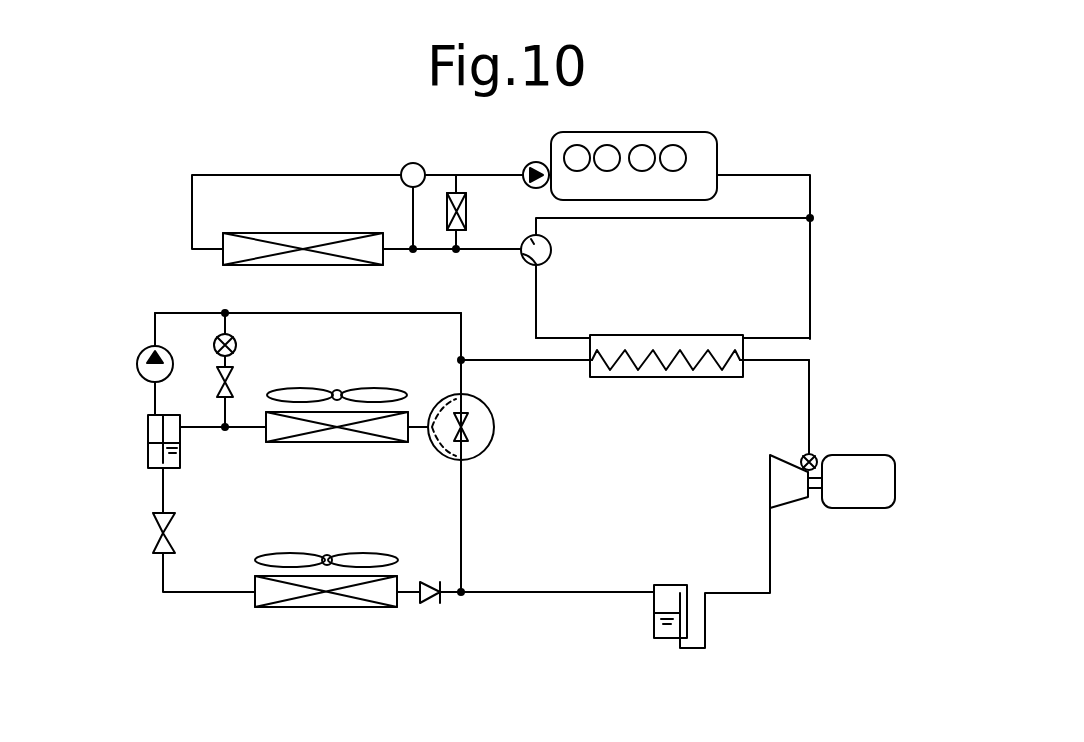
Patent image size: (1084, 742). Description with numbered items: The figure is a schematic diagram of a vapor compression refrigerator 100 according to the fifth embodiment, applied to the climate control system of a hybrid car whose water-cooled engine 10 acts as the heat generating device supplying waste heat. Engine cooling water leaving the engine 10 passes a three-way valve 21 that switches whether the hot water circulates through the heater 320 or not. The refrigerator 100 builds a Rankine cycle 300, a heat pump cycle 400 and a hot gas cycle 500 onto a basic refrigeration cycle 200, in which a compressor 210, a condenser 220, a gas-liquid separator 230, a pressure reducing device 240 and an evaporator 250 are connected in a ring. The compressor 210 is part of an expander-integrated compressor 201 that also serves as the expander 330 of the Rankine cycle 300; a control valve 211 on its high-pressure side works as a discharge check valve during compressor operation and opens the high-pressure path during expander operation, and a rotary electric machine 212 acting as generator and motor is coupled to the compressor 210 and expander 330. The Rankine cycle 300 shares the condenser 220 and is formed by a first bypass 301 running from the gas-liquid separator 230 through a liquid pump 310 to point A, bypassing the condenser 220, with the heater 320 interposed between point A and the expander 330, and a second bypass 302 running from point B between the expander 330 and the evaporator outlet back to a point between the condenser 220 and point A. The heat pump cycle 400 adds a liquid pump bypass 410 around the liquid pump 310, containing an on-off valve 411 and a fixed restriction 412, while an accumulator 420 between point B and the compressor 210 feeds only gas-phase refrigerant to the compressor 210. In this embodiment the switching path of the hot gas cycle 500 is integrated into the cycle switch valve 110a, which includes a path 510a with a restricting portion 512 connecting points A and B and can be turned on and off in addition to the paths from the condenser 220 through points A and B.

The engine 10 is at (717, 142).
The three-way valve 21 is at (552, 250).
The vapor compression refrigerator 100 is at (158, 302).
The cycle switch valve 110a is at (487, 401).
The refrigeration cycle 200 is at (880, 342).
The expander-integrated compressor 201 is at (855, 449).
The compressor 210 is at (751, 551).
The control valve 211 is at (802, 457).
The rotary electric machine 212 is at (857, 510).
The condenser 220 is at (337, 445).
The gas-liquid separator 230 is at (148, 455).
The pressure reducing device 240 is at (153, 535).
The evaporator 250 is at (323, 609).
The Rankine cycle 300 is at (458, 290).
The first bypass 301 is at (312, 313).
The second bypass 302 is at (464, 527).
The liquid pump 310 is at (137, 364).
The heater 320 is at (644, 378).
The expander 330 is at (770, 490).
The heat pump cycle 400 is at (388, 310).
The liquid pump bypass 410 is at (226, 323).
The on-off valve 411 is at (214, 346).
The restriction 412 is at (234, 380).
The accumulator 420 is at (654, 614).
The hot gas cycle 500 is at (817, 382).
The path 510a is at (482, 445).
The restricting portion 512 is at (470, 427).